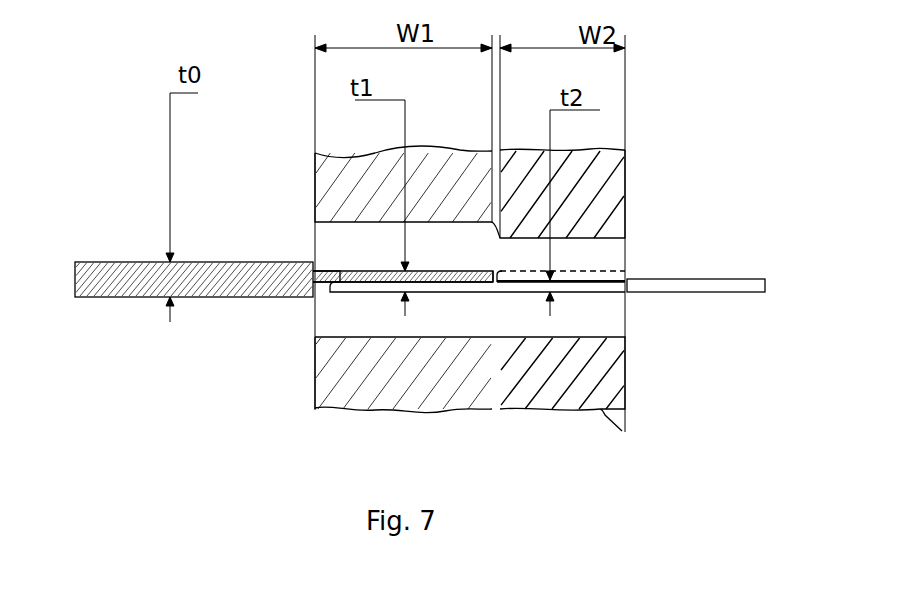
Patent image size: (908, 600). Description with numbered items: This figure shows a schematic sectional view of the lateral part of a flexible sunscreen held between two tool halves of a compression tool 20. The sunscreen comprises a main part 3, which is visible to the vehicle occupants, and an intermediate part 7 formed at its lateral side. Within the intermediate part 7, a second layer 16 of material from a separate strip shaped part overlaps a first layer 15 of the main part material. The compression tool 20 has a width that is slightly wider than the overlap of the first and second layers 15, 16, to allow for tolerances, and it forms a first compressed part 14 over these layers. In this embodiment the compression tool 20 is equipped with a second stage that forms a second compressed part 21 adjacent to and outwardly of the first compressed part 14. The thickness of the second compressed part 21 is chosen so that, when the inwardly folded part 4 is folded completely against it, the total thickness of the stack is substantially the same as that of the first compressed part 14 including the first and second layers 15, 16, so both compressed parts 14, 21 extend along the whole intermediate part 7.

The main part 3 is at (121, 282).
The inwardly folded part 4 is at (711, 251).
The intermediate part 7 is at (502, 288).
The first compressed part 14 is at (382, 282).
The first layer 15 is at (361, 277).
The second layer 16 is at (460, 288).
The compression tool 20 is at (624, 163).
The second compressed part 21 is at (582, 287).